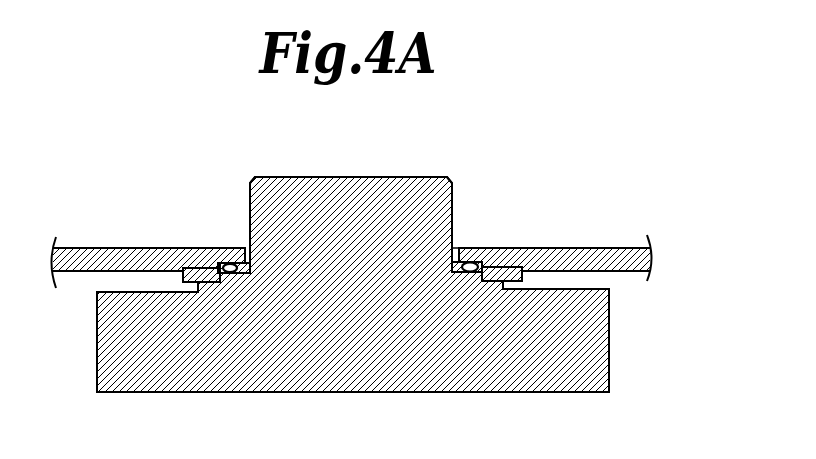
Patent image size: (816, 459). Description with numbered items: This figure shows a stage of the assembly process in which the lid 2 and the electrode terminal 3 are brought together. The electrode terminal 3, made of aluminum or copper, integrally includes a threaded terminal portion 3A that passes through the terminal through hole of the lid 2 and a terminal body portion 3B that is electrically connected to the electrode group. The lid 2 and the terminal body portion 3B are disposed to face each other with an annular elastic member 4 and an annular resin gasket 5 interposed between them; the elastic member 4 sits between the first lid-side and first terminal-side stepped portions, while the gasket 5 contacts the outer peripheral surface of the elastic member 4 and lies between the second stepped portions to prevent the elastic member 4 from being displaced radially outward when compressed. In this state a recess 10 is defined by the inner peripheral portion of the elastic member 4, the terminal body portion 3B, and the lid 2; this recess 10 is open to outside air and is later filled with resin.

The lid 2 is at (621, 247).
The electrode terminal 3 is at (610, 367).
The threaded terminal portion 3A is at (378, 177).
The terminal body portion 3B is at (604, 323).
The elastic member 4 is at (228, 248).
The resin gasket 5 is at (191, 268).
The recess 10 is at (456, 247).